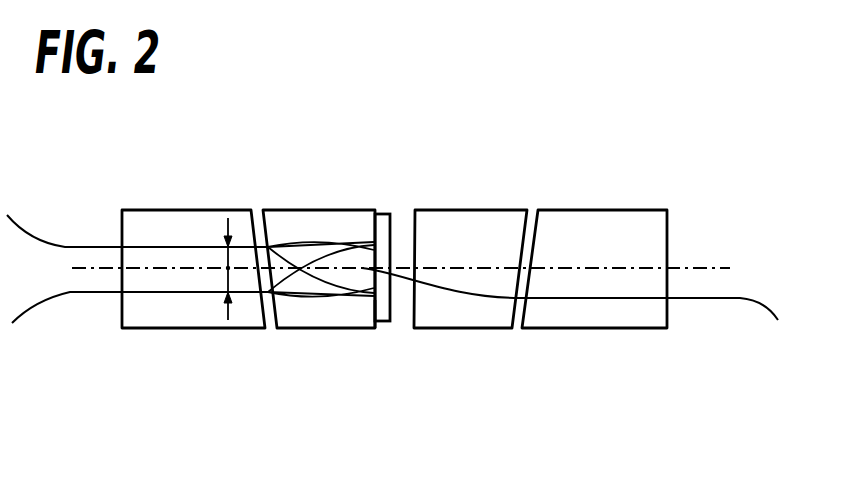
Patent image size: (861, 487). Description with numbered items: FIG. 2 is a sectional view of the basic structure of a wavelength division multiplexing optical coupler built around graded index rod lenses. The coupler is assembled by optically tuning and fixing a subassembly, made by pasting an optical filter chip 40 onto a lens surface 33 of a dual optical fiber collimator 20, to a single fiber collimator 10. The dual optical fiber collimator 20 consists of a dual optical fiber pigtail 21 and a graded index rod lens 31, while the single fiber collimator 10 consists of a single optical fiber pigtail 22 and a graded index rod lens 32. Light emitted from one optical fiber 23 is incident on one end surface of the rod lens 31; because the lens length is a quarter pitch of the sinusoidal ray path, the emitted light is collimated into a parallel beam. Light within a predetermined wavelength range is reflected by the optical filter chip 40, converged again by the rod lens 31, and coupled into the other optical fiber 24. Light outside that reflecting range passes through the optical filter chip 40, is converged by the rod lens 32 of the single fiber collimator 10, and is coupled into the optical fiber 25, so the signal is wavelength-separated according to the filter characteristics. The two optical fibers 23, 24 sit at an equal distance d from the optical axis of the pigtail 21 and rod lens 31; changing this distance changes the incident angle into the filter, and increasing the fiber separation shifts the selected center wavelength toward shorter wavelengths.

The single fiber collimator 10 is at (420, 395).
The dual optical fiber collimator 20 is at (75, 395).
The dual optical fiber pigtail 21 is at (257, 338).
The single optical fiber pigtail 22 is at (533, 338).
The optical fiber 23 is at (68, 247).
The optical fiber 24 is at (68, 293).
The optical fiber 25 is at (738, 298).
The graded index rod lens 31 is at (277, 220).
The graded index rod lens 32 is at (486, 220).
The lens surface 33 is at (375, 328).
The optical filter chip 40 is at (382, 218).
The distance d is at (228, 255).